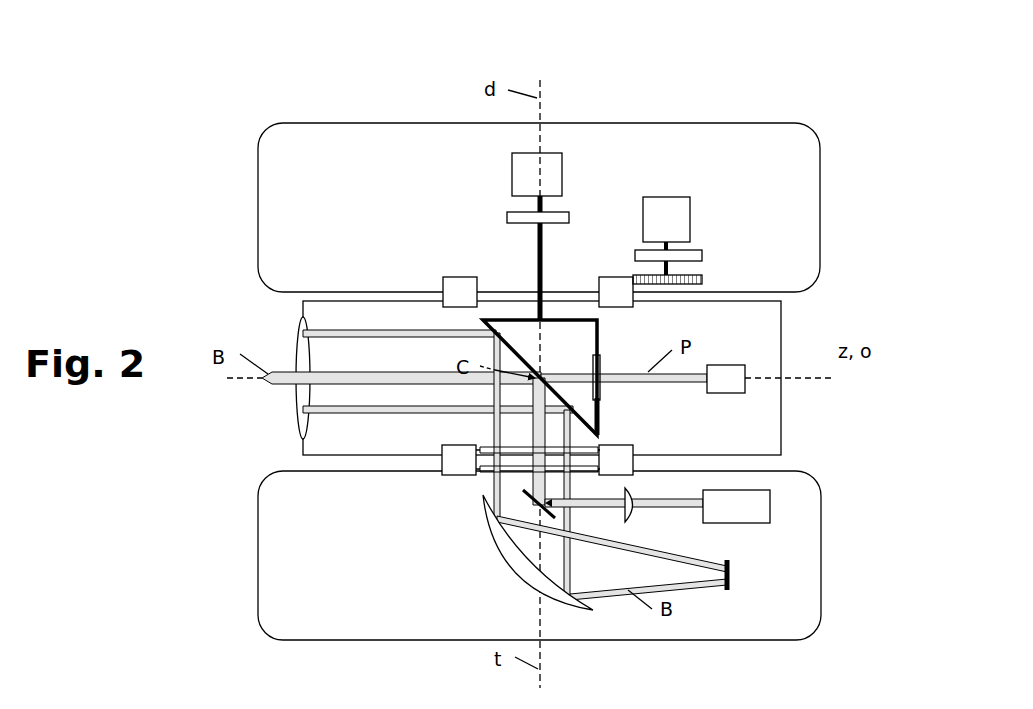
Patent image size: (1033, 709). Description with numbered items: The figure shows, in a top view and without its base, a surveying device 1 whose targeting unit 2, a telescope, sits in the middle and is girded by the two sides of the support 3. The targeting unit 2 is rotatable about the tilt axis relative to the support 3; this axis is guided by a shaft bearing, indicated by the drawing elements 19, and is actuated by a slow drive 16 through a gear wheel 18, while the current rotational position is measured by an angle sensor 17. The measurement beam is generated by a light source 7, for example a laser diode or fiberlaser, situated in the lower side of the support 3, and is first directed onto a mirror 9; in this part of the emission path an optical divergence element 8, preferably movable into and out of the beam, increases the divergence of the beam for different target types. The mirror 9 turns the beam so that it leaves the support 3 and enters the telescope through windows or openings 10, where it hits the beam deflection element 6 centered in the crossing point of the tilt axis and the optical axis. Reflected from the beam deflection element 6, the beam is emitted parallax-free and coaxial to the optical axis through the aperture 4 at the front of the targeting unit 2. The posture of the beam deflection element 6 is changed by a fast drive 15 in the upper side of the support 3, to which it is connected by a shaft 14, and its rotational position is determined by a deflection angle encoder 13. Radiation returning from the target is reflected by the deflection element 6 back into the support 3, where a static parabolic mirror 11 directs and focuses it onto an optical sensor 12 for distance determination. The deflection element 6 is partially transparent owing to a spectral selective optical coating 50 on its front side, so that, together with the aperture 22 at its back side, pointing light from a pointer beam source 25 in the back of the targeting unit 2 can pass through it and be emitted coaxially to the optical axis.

The surveying device 1 is at (256, 100).
The targeting unit 2 is at (542, 378).
The support 3 is at (539, 381).
The aperture 4 is at (294, 398).
The beam deflection element 6 is at (540, 377).
The light source 7 is at (736, 506).
The optical divergence element 8 is at (636, 518).
The mirror 9 is at (525, 500).
The windows or openings 10 is at (489, 474).
The static parabolic mirror 11 is at (516, 560).
The optical sensor 12 is at (732, 577).
The deflection angle encoder 13 is at (506, 217).
The shaft 14 is at (537, 268).
The drive 15 is at (537, 174).
The drive 16 is at (666, 236).
The angle sensor 17 is at (702, 257).
The gear wheel 18 is at (705, 283).
The shaft bearing 19 is at (537, 376).
The aperture 22 is at (601, 356).
The pointer beam source 25 is at (726, 379).
The spectral selective optical coating 50 is at (592, 418).